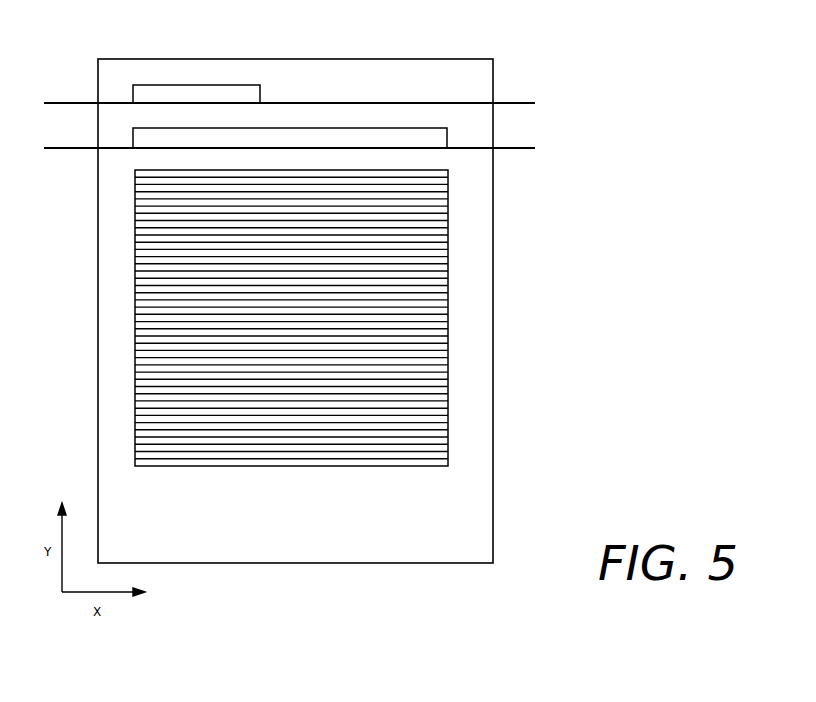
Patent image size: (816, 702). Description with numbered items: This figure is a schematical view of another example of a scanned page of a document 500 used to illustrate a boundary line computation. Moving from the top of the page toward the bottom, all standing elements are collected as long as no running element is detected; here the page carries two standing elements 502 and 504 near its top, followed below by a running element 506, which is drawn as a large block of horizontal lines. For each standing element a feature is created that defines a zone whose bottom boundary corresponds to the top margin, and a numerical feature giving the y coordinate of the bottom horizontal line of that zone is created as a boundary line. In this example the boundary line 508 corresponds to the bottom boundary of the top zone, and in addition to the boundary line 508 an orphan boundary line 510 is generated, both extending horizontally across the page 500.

The scanned page of a document 500 is at (362, 58).
The standing element 502 is at (205, 84).
The standing element 504 is at (447, 138).
The running element 506 is at (448, 282).
The boundary line 508 is at (512, 102).
The orphan boundary line 510 is at (82, 150).